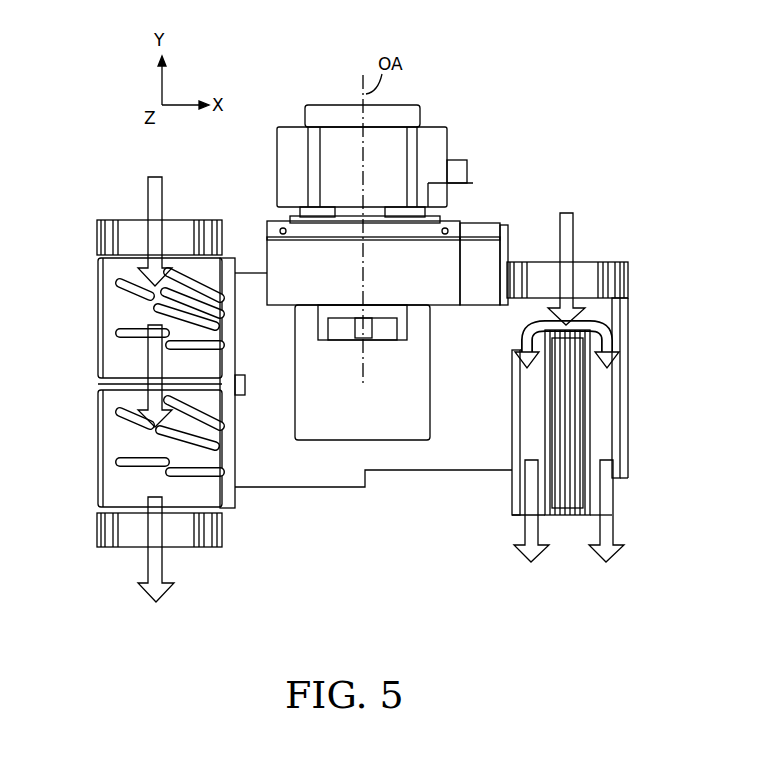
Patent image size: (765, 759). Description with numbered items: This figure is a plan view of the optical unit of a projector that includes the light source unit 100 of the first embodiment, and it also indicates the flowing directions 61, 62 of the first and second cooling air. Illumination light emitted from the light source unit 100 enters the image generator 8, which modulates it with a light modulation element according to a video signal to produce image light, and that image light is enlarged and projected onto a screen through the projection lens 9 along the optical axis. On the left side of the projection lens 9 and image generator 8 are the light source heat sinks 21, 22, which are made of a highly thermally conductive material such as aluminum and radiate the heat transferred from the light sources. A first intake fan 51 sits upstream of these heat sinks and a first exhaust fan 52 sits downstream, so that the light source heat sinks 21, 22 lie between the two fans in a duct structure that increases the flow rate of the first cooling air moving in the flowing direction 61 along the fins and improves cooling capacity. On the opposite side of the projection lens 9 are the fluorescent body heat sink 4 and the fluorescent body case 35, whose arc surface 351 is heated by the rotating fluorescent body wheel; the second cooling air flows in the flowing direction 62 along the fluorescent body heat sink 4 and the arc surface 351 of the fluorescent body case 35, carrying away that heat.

The fluorescent body heat sink 4 is at (595, 406).
The image generator 8 is at (362, 431).
The projection lens 9 is at (383, 158).
The light source heat sink 21 is at (134, 444).
The light source heat sink 22 is at (137, 317).
The fluorescent body case 35 is at (519, 434).
The first intake fan 51 is at (146, 212).
The first exhaust fan 52 is at (347, 399).
The flowing direction of the first cooling air 61 is at (173, 365).
The flowing direction of the second cooling air 62 is at (647, 560).
The light source unit 100 is at (373, 505).
The arc surface 351 is at (612, 356).